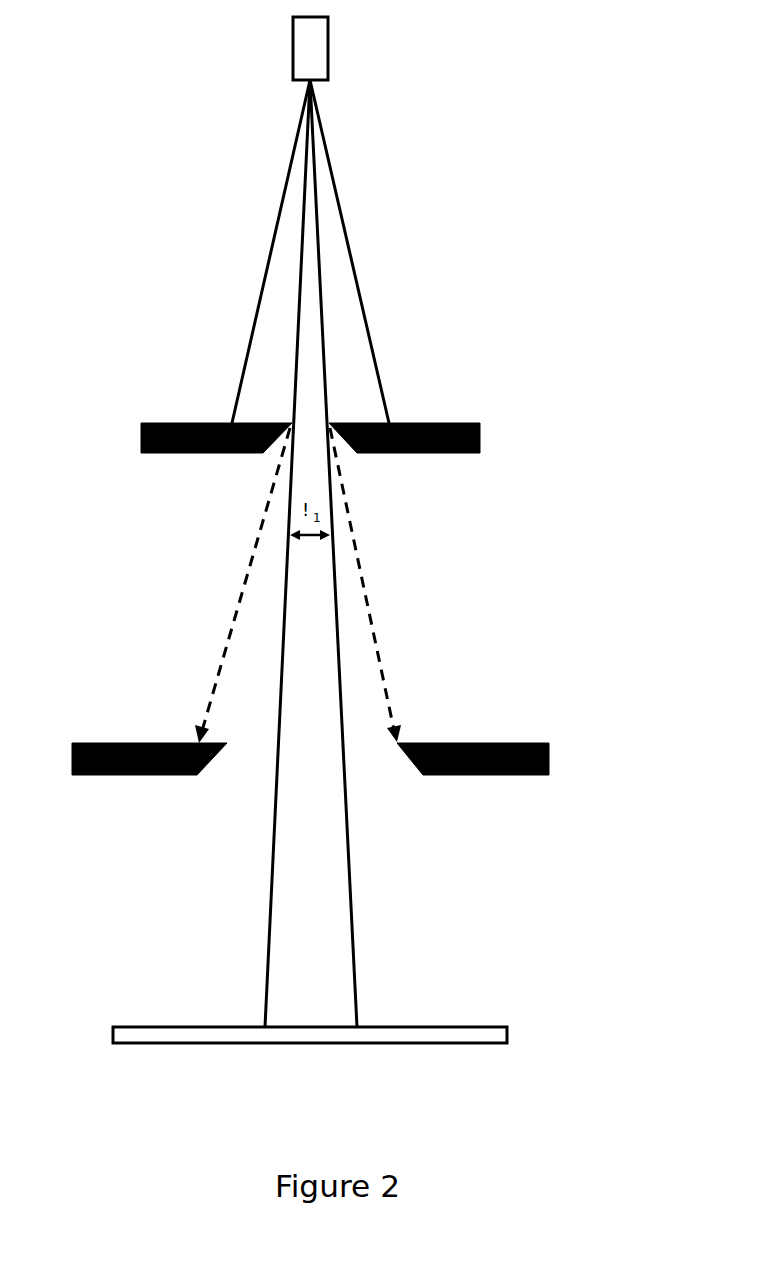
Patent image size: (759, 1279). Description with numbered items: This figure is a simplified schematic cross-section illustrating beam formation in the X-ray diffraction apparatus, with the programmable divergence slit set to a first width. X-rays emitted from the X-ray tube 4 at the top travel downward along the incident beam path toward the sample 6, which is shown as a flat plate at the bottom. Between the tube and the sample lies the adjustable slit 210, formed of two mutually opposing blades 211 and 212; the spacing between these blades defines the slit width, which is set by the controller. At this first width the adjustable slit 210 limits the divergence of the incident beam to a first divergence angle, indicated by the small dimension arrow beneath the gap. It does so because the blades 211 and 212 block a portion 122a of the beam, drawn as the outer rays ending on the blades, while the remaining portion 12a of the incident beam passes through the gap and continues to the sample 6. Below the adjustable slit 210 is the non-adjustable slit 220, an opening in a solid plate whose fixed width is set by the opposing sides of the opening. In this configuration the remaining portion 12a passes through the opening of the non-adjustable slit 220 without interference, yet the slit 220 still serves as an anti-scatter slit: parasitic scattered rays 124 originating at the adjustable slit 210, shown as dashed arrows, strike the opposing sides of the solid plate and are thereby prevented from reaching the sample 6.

The X-ray tube 4 is at (316, 52).
The blocked portion of the beam 122a is at (352, 323).
The remaining portion of the incident beam 12a is at (338, 937).
The adjustable slit 210 is at (264, 431).
The blade 212 is at (187, 423).
The blade 211 is at (437, 423).
The scattered rays 124 is at (236, 610).
The non-adjustable slit 220 is at (143, 743).
The sample 6 is at (180, 1028).